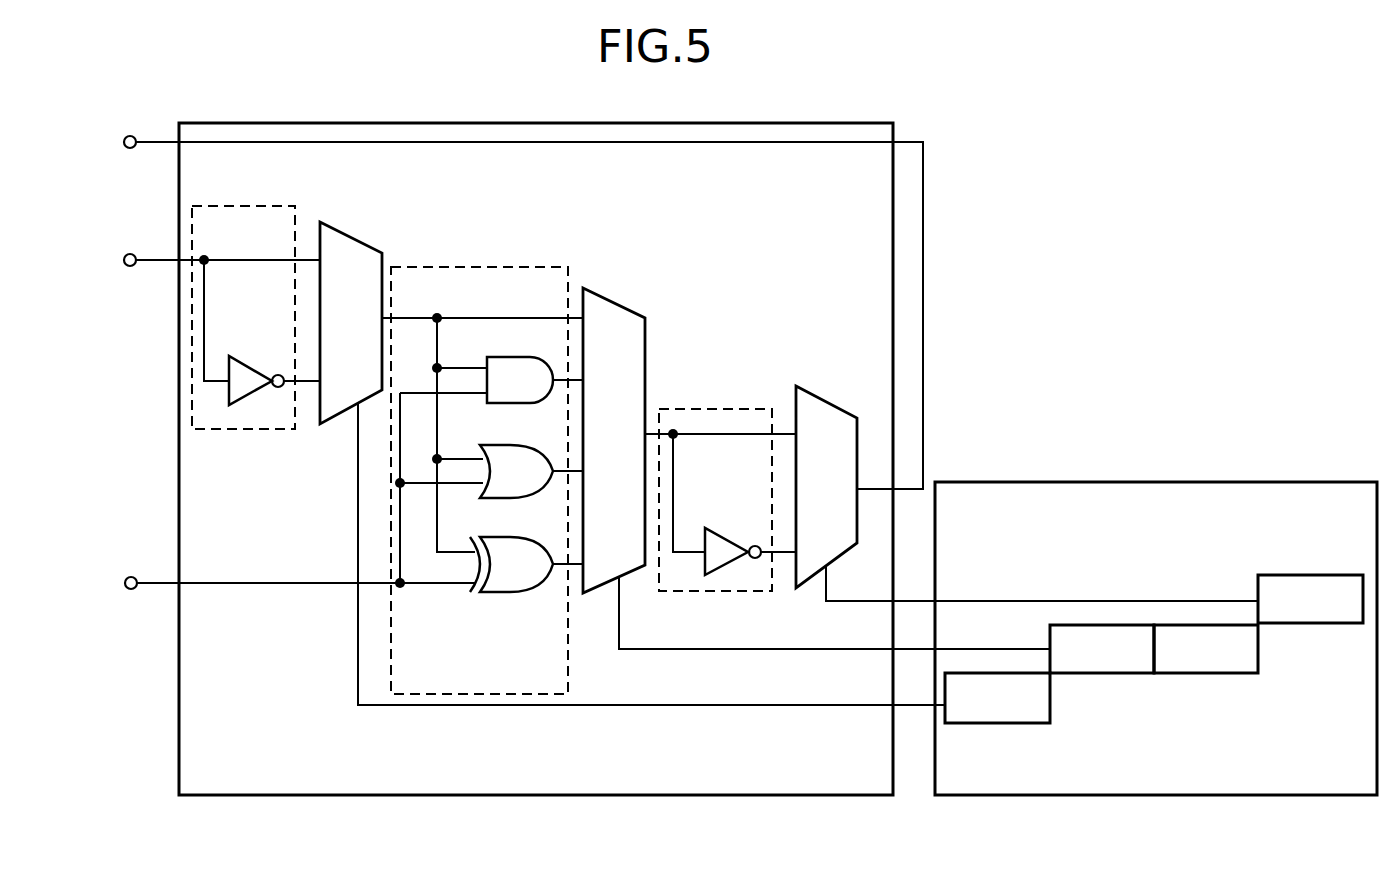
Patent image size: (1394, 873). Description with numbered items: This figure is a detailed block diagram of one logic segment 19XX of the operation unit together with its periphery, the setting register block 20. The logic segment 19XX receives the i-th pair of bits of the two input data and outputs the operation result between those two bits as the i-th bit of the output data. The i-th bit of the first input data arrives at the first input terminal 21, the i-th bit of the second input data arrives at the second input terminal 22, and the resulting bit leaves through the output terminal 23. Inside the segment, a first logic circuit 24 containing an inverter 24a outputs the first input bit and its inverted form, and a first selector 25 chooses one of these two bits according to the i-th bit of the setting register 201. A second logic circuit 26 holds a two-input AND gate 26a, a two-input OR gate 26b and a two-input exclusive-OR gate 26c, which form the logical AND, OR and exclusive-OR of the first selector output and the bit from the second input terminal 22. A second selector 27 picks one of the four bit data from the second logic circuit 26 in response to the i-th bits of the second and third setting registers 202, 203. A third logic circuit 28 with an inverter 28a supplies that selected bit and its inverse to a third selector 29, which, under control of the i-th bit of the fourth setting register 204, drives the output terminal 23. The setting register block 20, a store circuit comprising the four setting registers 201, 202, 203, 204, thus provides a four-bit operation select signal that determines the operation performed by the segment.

The logic segment 19XX is at (510, 797).
The setting register block 20 is at (1167, 481).
The first input terminal 21 is at (122, 269).
The second input terminal 22 is at (122, 591).
The output terminal 23 is at (122, 151).
The first logic circuit 24 is at (230, 430).
The inverter 24a is at (253, 362).
The first selector 25 is at (346, 227).
The second logic circuit 26 is at (462, 263).
The two-input AND gate 26a is at (507, 405).
The two-input OR gate 26b is at (507, 499).
The two-input EX-OR gate 26c is at (490, 594).
The second selector 27 is at (615, 298).
The third logic circuit 28 is at (714, 407).
The inverter 28a is at (726, 526).
The third selector 29 is at (818, 394).
The setting register 201 is at (995, 725).
The second setting register 202 is at (1093, 675).
The third setting register 203 is at (1200, 675).
The fourth setting register 204 is at (1305, 626).